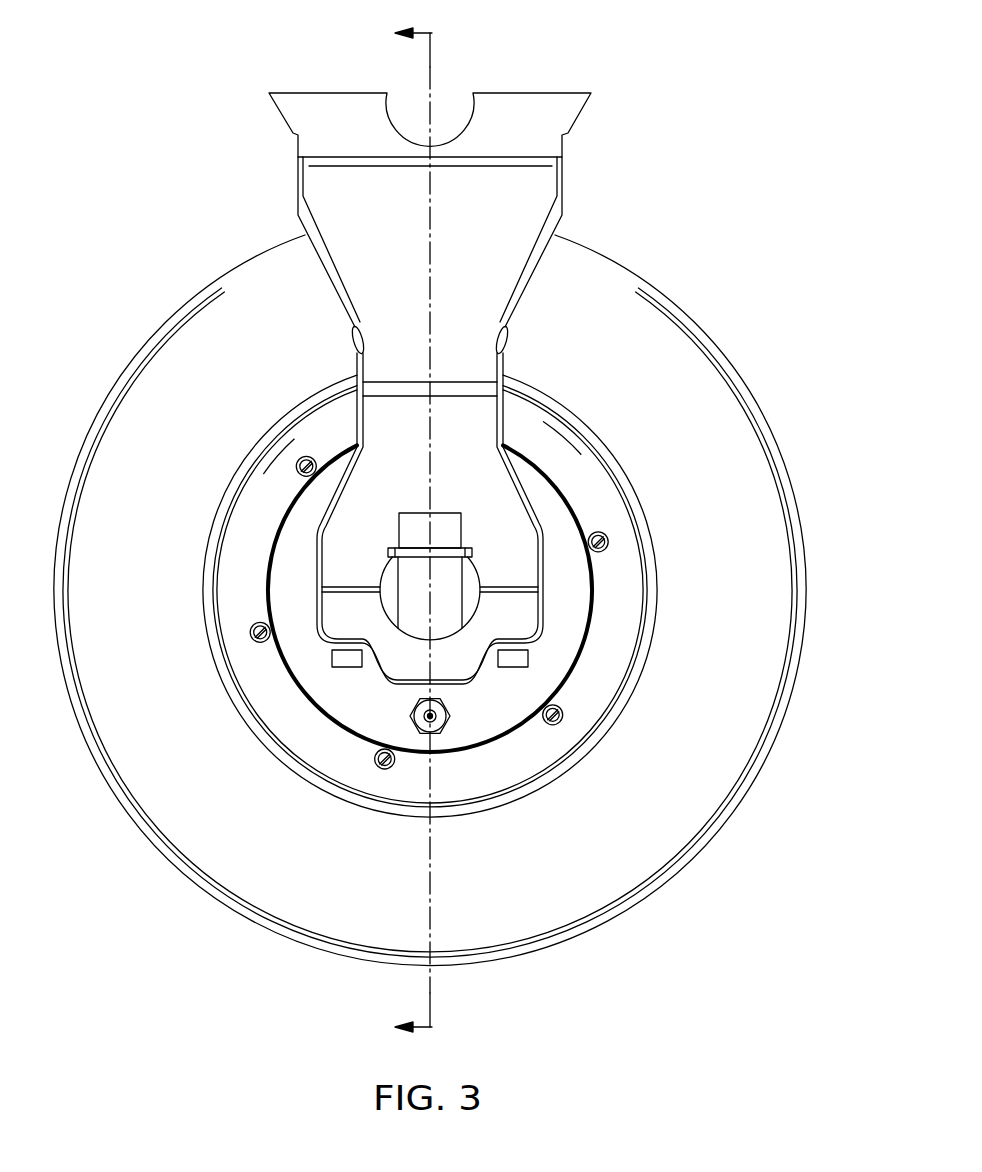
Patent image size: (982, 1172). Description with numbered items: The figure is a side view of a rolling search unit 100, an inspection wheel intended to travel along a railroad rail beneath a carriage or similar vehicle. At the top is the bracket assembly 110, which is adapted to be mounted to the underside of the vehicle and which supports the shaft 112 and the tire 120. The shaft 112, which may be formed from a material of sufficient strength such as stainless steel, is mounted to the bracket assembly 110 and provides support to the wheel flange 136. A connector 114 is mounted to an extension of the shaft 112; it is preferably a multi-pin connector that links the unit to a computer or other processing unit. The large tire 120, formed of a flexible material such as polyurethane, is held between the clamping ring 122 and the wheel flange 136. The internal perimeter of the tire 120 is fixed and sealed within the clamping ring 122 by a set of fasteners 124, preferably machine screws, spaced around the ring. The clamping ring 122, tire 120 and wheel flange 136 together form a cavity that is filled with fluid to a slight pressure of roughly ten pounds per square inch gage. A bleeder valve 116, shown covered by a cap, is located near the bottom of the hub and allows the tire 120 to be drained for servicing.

The rolling search unit 100 is at (142, 81).
The bracket assembly 110 is at (535, 186).
The shaft 112 is at (380, 596).
The connector 114 is at (445, 512).
The bleeder valve 116 is at (448, 708).
The tire 120 is at (228, 268).
The clamping ring 122 is at (598, 438).
The fasteners 124 is at (297, 459).
The wheel flange 136 is at (608, 597).